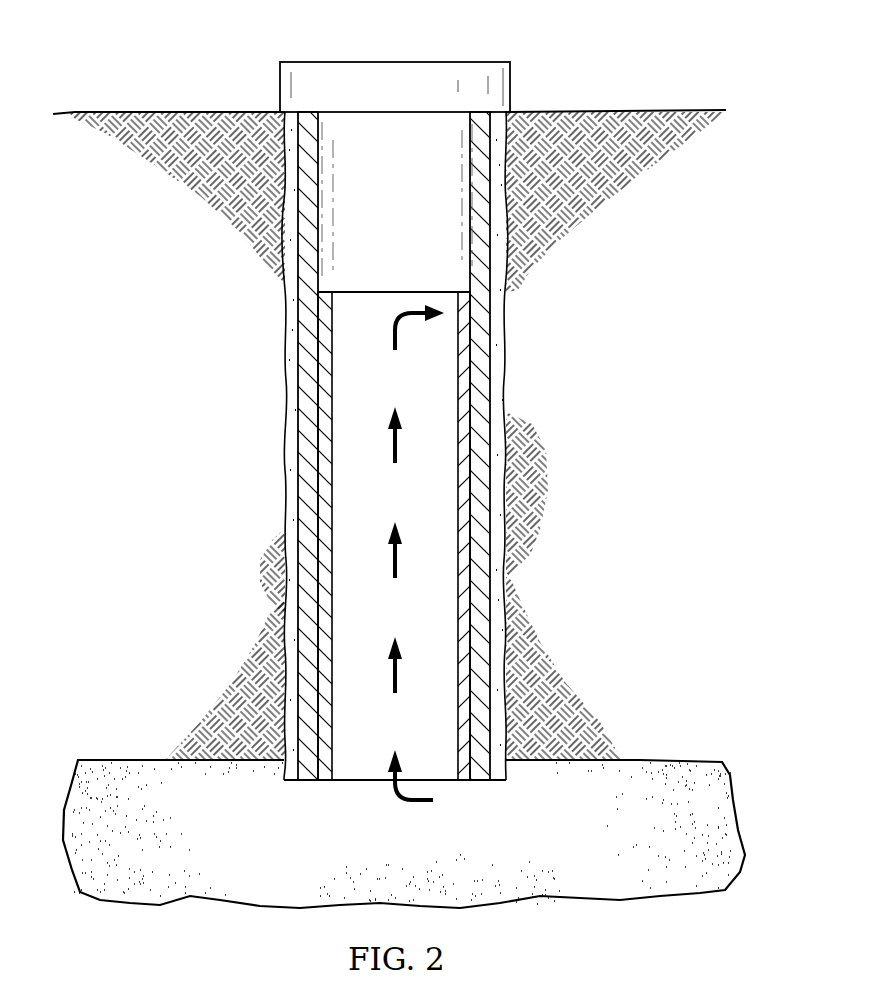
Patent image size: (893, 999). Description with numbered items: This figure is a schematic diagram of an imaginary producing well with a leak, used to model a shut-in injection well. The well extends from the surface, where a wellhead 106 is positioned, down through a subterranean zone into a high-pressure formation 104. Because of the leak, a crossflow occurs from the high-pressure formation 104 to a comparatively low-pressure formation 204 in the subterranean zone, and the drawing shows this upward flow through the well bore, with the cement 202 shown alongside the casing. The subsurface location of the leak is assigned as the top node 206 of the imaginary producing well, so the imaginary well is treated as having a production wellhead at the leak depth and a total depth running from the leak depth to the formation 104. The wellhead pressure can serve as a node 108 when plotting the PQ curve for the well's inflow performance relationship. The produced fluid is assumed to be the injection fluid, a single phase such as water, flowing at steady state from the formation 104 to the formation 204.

The formation 104 is at (377, 843).
The wellhead 106 is at (280, 88).
The node 108 is at (308, 98).
The cement sheath 202 is at (453, 412).
The formation 204 is at (604, 480).
The top node 206 is at (462, 278).